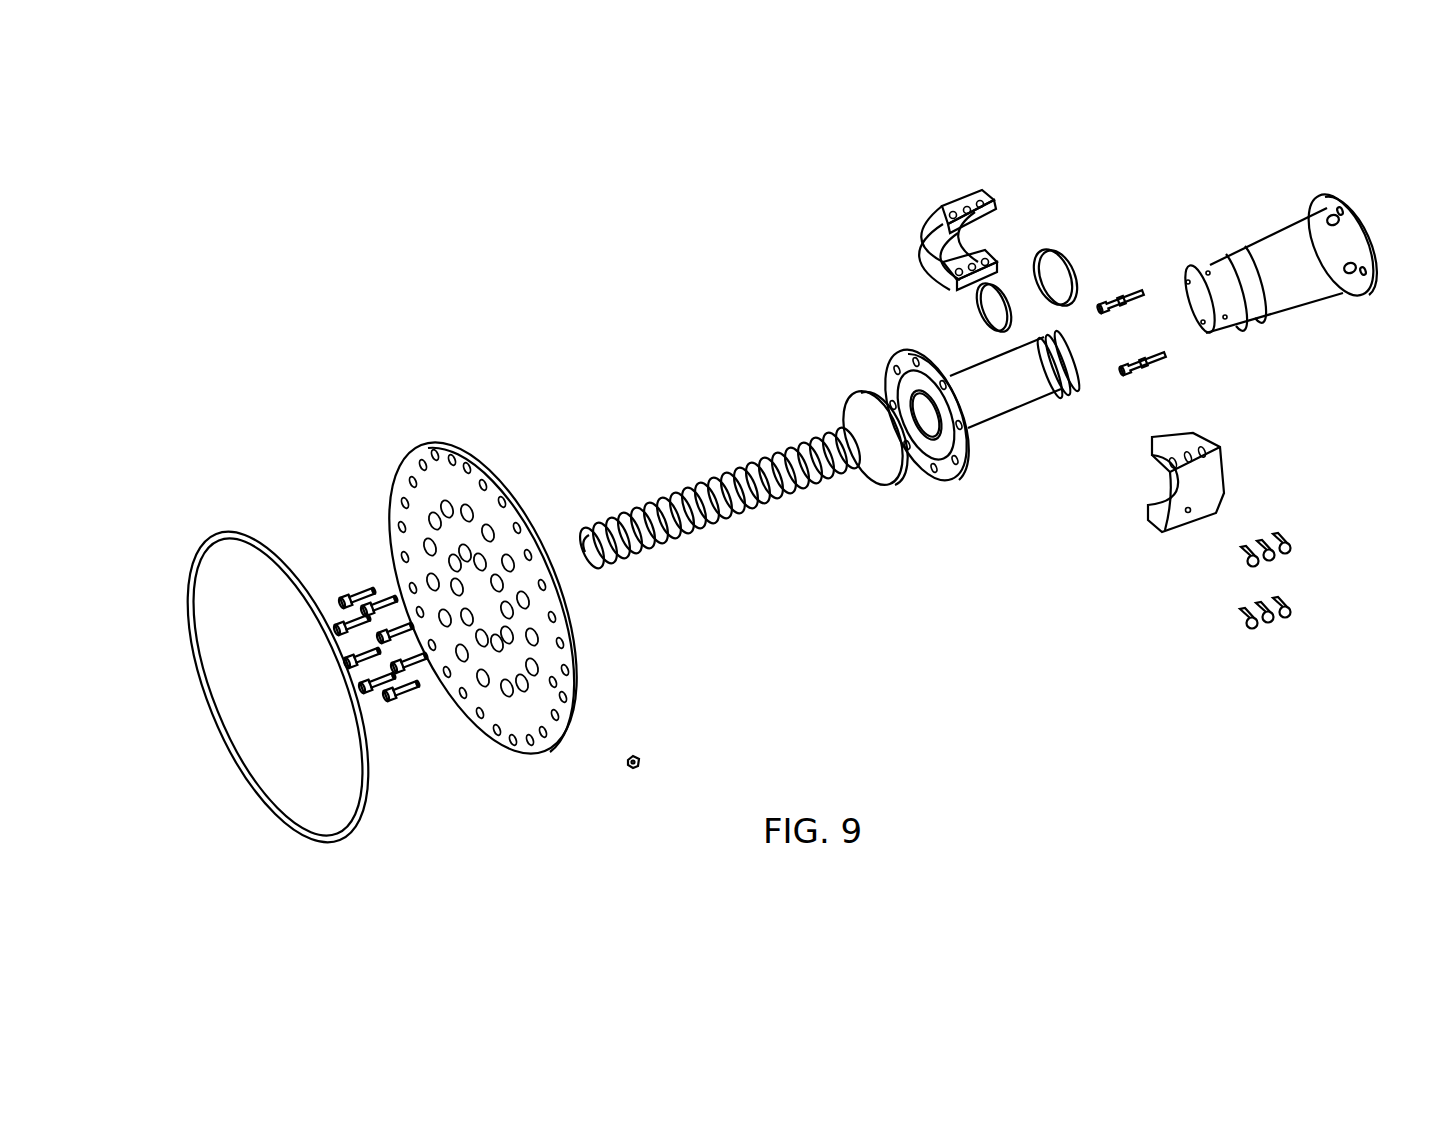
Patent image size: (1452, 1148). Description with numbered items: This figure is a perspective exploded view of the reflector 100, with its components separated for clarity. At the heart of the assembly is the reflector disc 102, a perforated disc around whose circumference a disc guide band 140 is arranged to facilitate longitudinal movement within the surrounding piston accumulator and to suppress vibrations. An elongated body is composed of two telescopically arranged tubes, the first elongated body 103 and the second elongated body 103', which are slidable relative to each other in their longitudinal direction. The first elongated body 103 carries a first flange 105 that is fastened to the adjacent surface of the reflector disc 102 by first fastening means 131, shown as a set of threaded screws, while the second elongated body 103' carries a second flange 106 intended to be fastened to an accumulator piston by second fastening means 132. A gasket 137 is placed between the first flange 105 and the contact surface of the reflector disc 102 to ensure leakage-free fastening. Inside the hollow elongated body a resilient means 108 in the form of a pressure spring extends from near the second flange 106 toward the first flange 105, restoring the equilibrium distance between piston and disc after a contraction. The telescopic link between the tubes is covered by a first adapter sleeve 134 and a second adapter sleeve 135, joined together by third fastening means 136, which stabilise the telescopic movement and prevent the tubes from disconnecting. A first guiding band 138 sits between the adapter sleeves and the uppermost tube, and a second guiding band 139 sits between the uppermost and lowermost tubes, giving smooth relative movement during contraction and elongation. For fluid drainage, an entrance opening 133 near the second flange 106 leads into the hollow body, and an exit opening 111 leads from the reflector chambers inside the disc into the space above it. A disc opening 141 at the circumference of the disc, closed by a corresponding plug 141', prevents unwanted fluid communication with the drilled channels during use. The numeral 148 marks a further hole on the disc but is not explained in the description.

The reflector 100 is at (662, 373).
The reflector disc 102 is at (466, 452).
The first elongated body 103 is at (1017, 378).
The second elongated body 103' is at (1261, 272).
The first flange 105 is at (898, 352).
The second flange 106 is at (1347, 194).
The resilient means 108 is at (712, 482).
The exit opening 111 is at (551, 686).
The first fastening means 131 is at (352, 590).
The second fastening means 132 is at (1112, 290).
The entrance opening 133 is at (1362, 282).
The first adapter sleeve 134 is at (996, 195).
The second adapter sleeve 135 is at (1220, 446).
The third fastening means 136 is at (1292, 540).
The gasket 137 is at (893, 470).
The first guiding band 138 is at (973, 309).
The second guiding band 139 is at (1057, 250).
The disc guide band 140 is at (236, 529).
The disc opening 141 is at (607, 681).
The plug 141' is at (673, 753).
The hole 148 is at (505, 498).